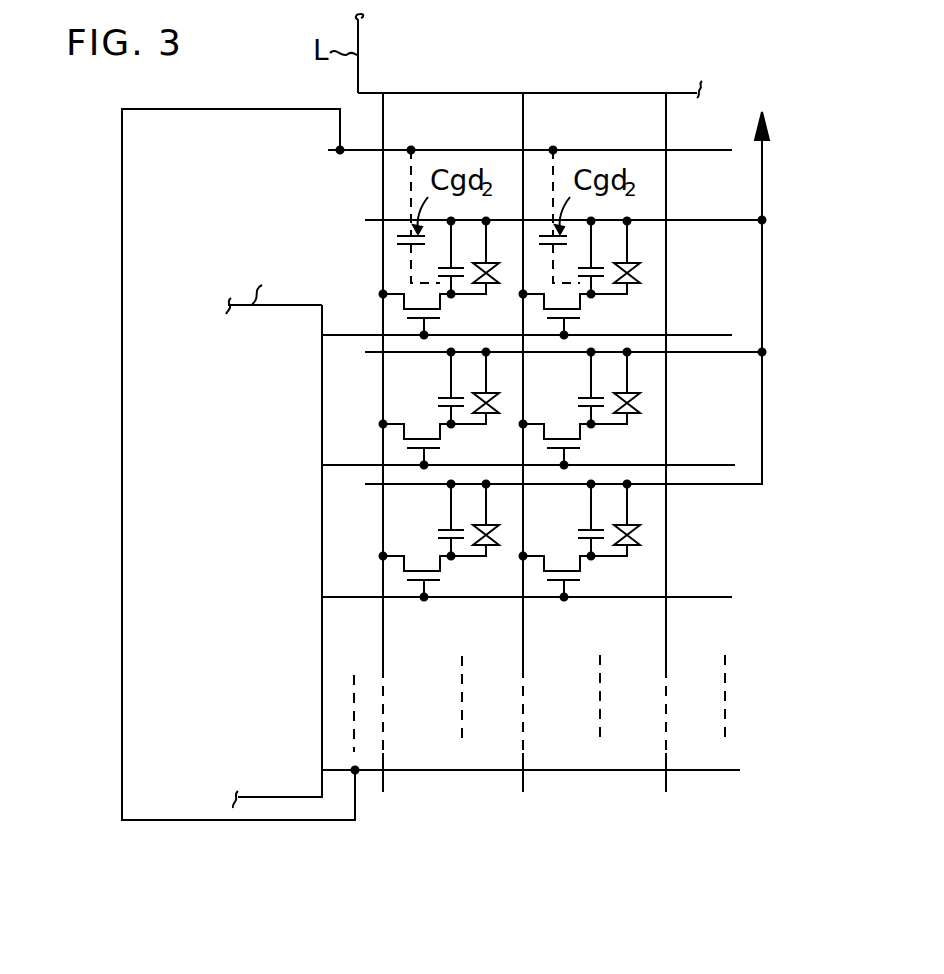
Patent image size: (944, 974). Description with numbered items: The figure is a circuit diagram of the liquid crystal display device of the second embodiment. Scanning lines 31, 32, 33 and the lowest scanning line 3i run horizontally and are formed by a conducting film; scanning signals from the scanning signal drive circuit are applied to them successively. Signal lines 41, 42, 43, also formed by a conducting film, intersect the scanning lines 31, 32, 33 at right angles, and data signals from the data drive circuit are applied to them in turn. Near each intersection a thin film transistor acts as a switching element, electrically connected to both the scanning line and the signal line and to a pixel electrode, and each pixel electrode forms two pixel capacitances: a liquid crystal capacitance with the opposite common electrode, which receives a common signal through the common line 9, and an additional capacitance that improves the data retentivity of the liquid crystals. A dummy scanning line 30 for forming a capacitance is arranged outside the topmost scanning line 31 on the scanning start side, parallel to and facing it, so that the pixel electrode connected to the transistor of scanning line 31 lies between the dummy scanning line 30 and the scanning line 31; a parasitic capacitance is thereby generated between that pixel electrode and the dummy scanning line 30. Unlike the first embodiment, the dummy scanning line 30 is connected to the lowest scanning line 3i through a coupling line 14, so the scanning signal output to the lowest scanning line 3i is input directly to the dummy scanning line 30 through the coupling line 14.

The coupling line 14 is at (122, 641).
The common line 9 is at (763, 416).
The dummy scanning line 30 is at (352, 151).
The scanning line 31 is at (347, 336).
The scanning line 32 is at (347, 466).
The scanning line 33 is at (346, 598).
The lowest scanning line 3i is at (373, 772).
The signal line 41 is at (386, 116).
The signal line 42 is at (526, 116).
The signal line 43 is at (669, 123).